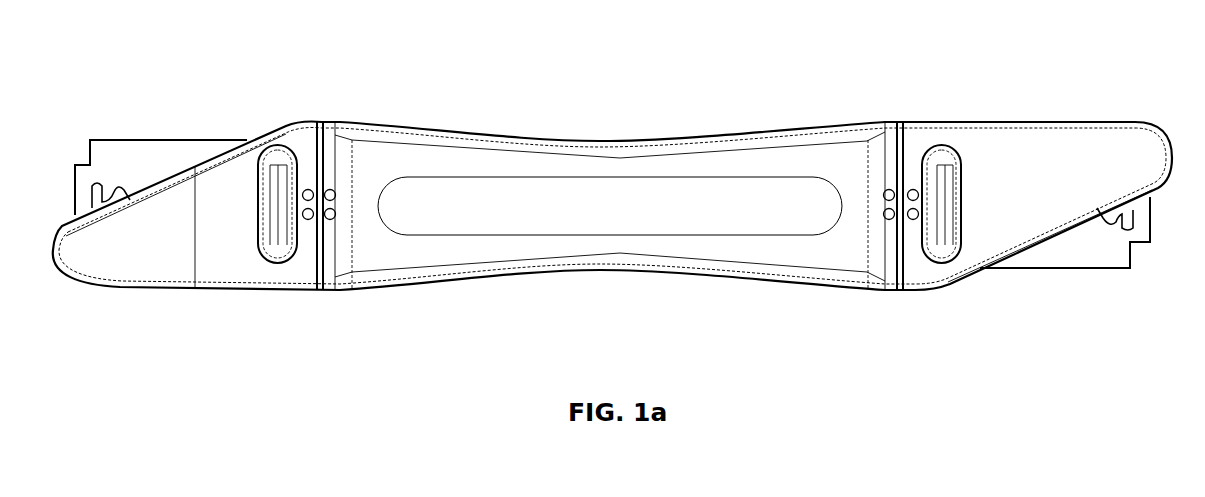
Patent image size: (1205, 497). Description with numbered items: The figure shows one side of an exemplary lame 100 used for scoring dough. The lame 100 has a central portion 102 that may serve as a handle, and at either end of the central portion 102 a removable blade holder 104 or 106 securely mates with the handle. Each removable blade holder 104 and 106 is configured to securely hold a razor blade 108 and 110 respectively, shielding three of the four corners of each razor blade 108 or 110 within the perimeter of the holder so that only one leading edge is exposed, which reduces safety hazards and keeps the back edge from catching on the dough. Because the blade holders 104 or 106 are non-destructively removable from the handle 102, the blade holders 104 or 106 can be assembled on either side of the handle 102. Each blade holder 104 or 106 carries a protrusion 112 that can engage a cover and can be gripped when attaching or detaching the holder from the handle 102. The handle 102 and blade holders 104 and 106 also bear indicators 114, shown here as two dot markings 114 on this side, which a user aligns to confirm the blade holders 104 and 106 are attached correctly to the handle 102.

The lame 100 is at (555, 48).
The central portion 102 is at (643, 197).
The removable blade holder 104 is at (182, 227).
The removable blade holder 106 is at (1075, 150).
The razor blade 108 is at (112, 153).
The razor blade 110 is at (1143, 233).
The protrusion 112 is at (278, 175).
The indicators 114 is at (308, 190).